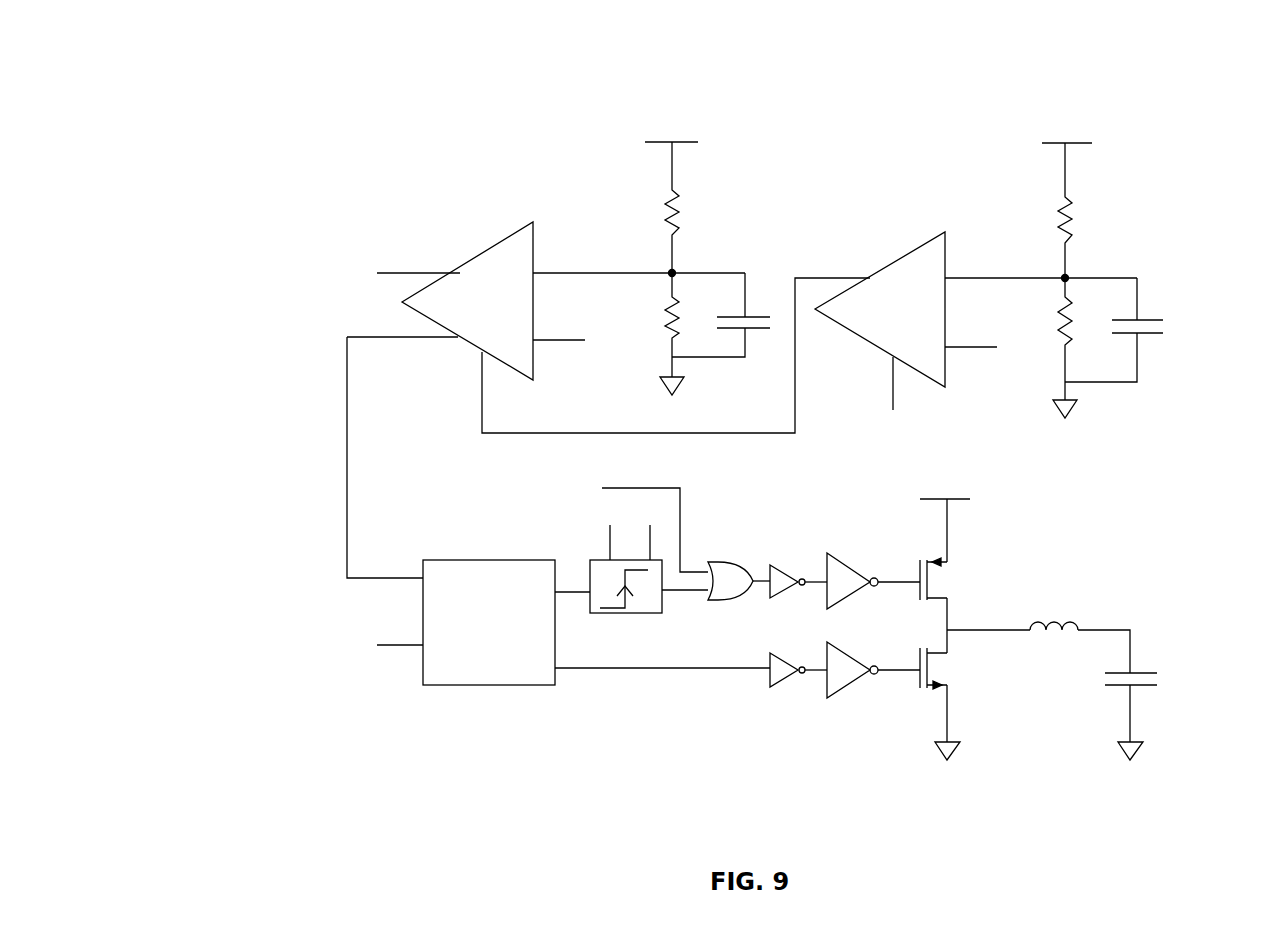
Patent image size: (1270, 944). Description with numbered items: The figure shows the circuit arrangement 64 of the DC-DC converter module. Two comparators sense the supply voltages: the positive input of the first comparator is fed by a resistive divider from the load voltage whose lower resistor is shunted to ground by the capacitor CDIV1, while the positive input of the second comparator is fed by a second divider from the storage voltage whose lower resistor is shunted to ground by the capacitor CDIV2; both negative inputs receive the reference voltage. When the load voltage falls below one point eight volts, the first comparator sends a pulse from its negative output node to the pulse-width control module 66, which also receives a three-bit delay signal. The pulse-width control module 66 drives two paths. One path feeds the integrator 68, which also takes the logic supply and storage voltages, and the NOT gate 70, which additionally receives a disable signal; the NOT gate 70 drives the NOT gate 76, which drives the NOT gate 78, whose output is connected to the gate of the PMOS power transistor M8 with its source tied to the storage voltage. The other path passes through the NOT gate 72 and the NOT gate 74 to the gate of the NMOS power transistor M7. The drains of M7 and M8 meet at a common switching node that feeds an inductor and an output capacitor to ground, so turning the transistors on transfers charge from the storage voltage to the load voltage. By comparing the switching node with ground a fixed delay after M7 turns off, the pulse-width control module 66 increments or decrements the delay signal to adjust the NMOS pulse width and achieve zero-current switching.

The circuit arrangement 64 is at (370, 157).
The pulse-width control module 66 is at (463, 670).
The integrator 68 is at (598, 633).
The NOT gate 70 is at (707, 607).
The NOT gate 72 is at (773, 695).
The NOT gate 74 is at (840, 695).
The NOT gate 76 is at (778, 555).
The NOT gate 78 is at (842, 545).
The PMOS power transistor M8 is at (950, 568).
The NMOS power transistor M7 is at (940, 668).
The capacitor CDIV1 is at (762, 313).
The capacitor CDIV2 is at (1150, 313).